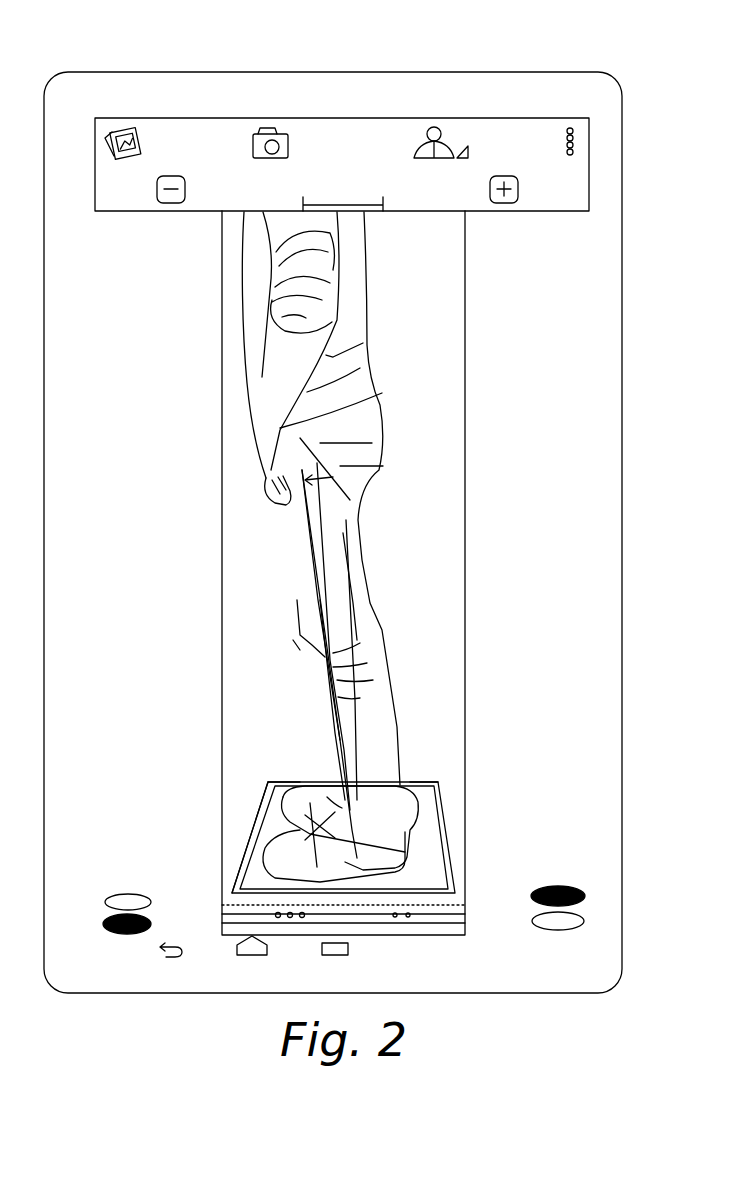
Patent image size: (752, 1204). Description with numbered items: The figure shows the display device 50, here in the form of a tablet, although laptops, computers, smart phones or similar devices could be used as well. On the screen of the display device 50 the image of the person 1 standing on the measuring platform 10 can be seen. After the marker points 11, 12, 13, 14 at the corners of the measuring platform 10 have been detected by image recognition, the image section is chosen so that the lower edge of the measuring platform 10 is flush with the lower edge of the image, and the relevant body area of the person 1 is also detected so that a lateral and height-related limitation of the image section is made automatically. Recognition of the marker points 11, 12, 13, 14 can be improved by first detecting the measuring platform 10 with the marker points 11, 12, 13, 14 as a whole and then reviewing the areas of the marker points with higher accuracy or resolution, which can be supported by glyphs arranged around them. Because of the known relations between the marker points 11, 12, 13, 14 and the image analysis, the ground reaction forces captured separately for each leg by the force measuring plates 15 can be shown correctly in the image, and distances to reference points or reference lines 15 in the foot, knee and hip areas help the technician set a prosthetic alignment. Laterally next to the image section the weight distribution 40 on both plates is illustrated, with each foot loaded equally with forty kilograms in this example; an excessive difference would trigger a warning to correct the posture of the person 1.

The display device 50 is at (390, 60).
The person 1 is at (393, 326).
The force measuring plate 15 is at (375, 466).
The measuring platform 10 is at (330, 565).
The marker point 11 is at (458, 888).
The marker point 12 is at (230, 895).
The marker point 13 is at (269, 780).
The marker point 14 is at (434, 777).
The weight display 40 is at (341, 887).